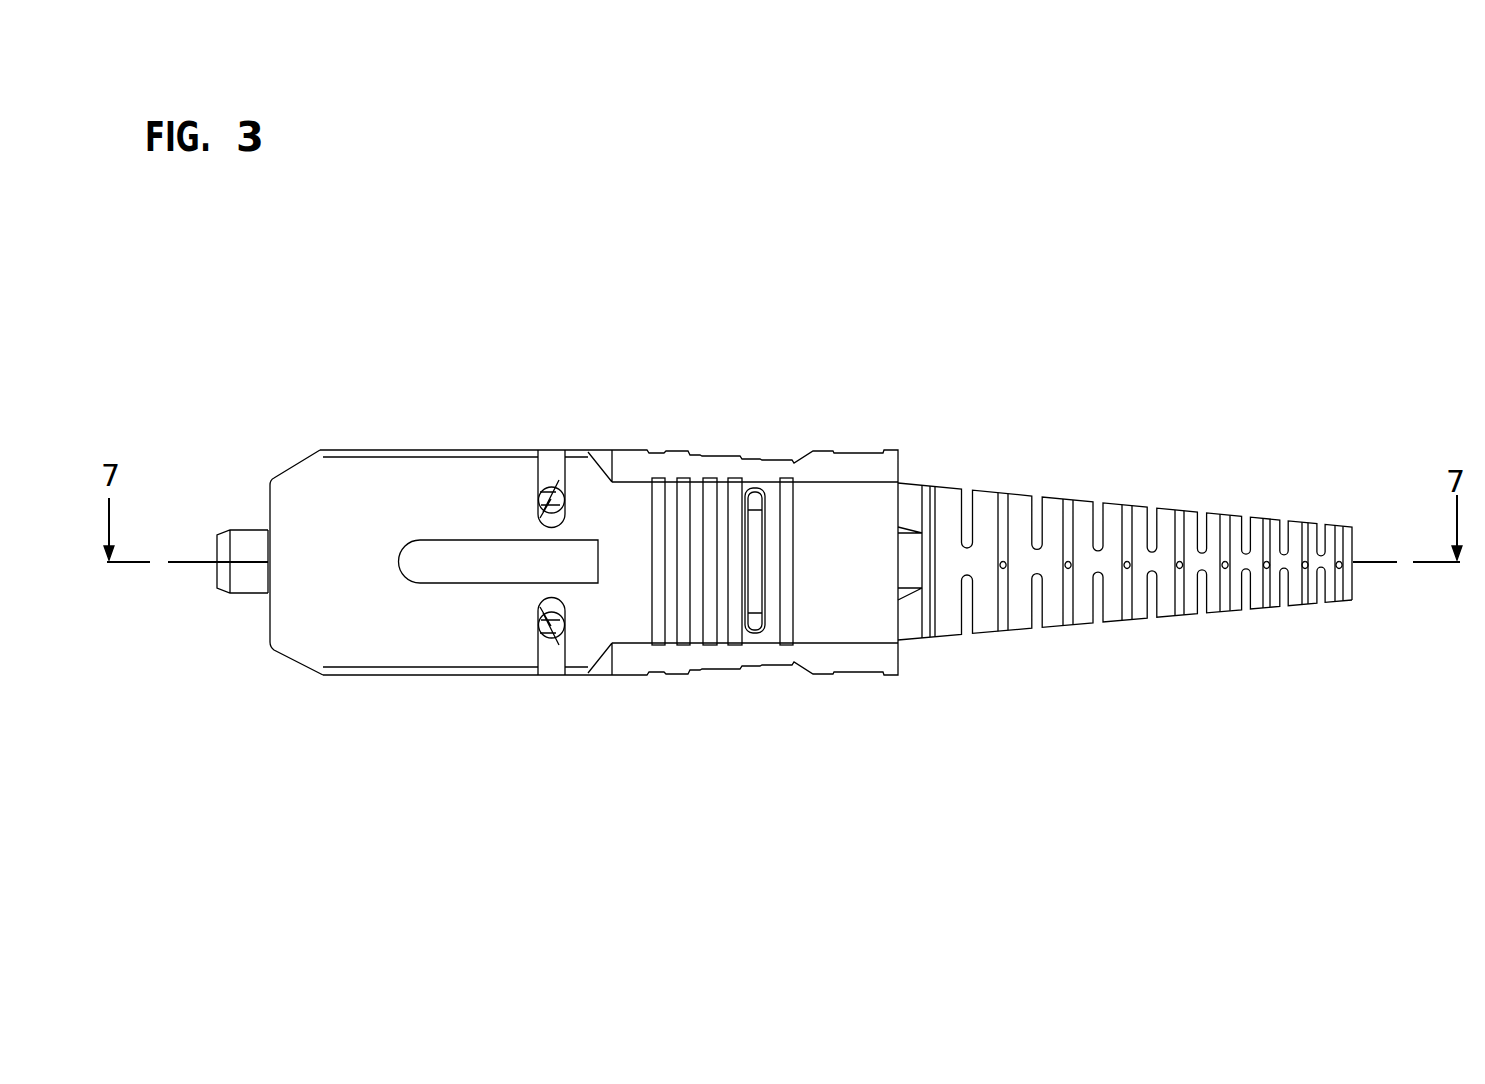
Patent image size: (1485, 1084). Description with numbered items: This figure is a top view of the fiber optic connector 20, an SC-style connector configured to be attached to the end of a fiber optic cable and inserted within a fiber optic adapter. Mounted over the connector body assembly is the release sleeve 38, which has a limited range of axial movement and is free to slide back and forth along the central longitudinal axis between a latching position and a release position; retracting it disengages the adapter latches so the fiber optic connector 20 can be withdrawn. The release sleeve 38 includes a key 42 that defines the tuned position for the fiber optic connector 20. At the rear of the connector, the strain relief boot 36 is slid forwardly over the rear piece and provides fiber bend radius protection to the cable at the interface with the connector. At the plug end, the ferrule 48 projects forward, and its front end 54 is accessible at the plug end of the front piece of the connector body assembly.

The fiber optic connector 20 is at (881, 368).
The strain relief boot 36 is at (1018, 492).
The release sleeve 38 is at (433, 468).
The key 42 is at (455, 567).
The ferrule 48 is at (240, 593).
The front end 54 is at (218, 573).